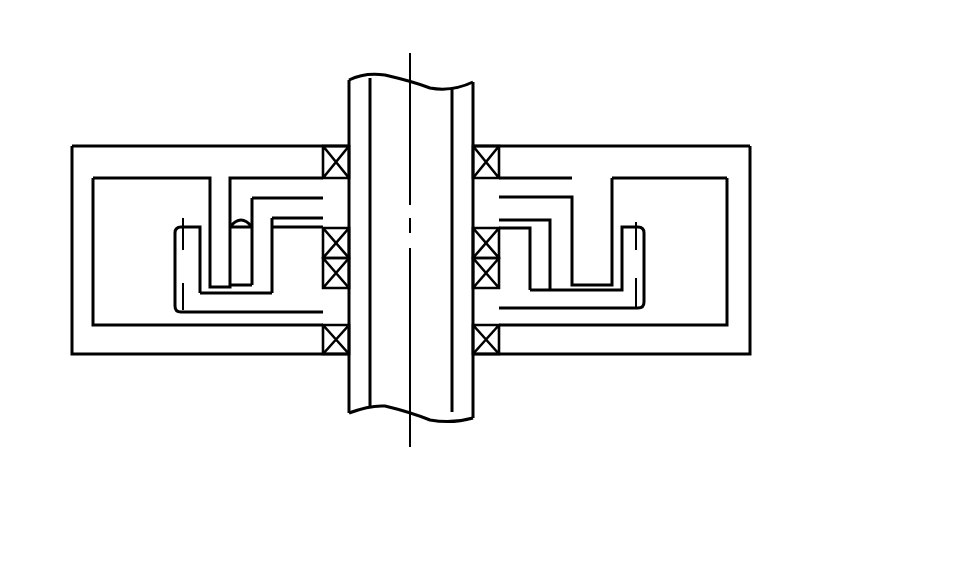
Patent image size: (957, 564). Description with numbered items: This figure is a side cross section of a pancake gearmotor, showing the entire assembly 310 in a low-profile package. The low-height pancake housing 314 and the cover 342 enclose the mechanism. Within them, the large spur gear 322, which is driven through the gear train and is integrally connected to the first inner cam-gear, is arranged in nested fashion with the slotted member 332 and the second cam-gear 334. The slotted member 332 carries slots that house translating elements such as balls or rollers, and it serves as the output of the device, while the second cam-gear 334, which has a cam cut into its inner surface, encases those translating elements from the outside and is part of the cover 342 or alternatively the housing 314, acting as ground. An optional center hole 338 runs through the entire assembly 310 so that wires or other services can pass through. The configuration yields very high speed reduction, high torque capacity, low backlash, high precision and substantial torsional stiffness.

The assembly 310 is at (650, 90).
The pancake housing 314 is at (752, 216).
The large spur gear 322 is at (172, 255).
The slotted member 332 is at (475, 383).
The second cam-gear 334 is at (610, 197).
The center hole 338 is at (427, 105).
The cover 342 is at (222, 145).